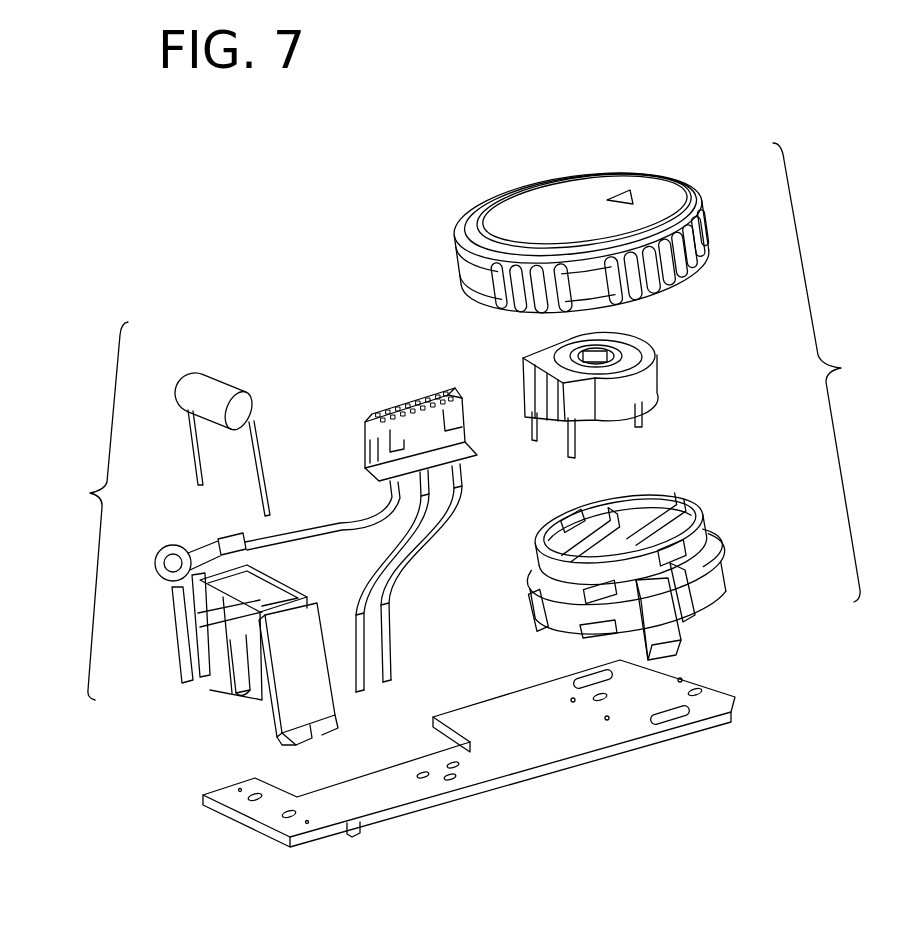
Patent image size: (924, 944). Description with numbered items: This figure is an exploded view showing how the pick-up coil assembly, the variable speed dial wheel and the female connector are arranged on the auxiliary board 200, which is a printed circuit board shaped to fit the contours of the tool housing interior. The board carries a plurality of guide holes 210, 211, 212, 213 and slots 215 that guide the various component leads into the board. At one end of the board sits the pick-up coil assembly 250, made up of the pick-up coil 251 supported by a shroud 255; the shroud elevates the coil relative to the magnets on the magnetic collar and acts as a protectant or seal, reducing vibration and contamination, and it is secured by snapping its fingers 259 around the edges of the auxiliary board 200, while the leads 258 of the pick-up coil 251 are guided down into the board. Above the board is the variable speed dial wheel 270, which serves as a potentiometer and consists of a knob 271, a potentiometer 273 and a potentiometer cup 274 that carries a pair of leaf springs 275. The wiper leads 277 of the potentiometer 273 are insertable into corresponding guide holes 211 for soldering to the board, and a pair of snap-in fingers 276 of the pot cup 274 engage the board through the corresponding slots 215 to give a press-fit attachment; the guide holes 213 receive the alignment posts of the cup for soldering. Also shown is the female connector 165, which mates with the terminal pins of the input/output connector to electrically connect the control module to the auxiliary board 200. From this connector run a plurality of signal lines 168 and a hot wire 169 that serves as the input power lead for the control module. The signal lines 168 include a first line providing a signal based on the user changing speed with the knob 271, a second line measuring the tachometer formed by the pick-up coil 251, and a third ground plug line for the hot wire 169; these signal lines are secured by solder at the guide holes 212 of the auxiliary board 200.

The female connector 165 is at (485, 390).
The signal lines 168 is at (393, 607).
The hot wire 169 is at (307, 522).
The auxiliary board 200 is at (495, 797).
The guide holes 210 is at (287, 815).
The guide holes 211 is at (680, 680).
The guide holes 212 is at (423, 775).
The guide holes 213 is at (735, 678).
The slots 215 is at (717, 732).
The pick-up coil assembly 250 is at (84, 511).
The pick-up coil 251 is at (237, 390).
The shroud 255 is at (292, 605).
The leads 258 is at (268, 458).
The fingers 259 is at (280, 724).
The variable speed dial wheel 270 is at (829, 372).
The knob 271 is at (477, 220).
The potentiometer 273 is at (590, 376).
The potentiometer cup 274 is at (703, 518).
The leaf springs 275 is at (523, 597).
The snap-in fingers 276 is at (680, 668).
The wiper leads 277 is at (582, 453).